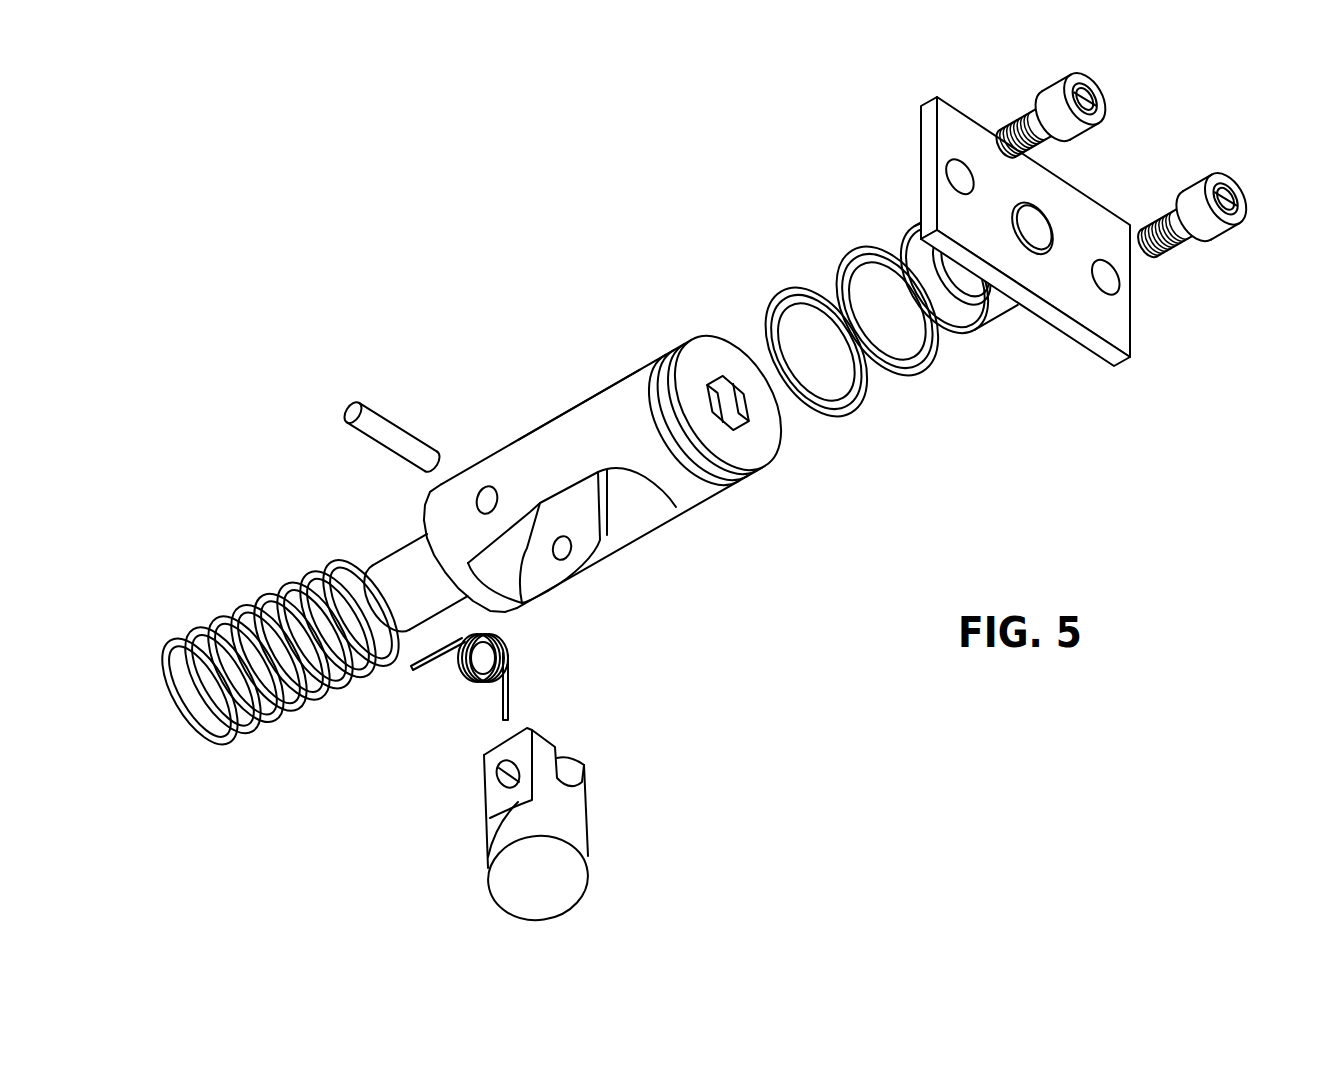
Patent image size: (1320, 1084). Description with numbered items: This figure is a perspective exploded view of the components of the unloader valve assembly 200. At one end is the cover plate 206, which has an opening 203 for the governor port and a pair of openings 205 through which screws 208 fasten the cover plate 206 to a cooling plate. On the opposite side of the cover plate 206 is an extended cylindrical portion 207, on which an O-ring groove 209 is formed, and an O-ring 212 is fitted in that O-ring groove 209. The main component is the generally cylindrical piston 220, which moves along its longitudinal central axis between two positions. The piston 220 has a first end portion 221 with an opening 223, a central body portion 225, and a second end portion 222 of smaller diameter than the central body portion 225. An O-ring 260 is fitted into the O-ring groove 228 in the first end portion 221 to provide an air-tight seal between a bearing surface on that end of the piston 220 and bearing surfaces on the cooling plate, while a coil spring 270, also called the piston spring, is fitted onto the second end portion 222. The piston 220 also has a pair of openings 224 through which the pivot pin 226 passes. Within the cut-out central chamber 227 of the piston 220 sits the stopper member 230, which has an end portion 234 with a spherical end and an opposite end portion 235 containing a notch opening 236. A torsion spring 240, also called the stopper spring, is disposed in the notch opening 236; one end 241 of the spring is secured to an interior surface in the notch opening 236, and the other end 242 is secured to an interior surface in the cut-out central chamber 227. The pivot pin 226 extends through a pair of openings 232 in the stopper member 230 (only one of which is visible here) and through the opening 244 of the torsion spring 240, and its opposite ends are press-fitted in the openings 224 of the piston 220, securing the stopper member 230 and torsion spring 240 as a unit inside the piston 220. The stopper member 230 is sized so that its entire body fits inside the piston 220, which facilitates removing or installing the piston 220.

The unloader valve assembly 200 is at (490, 224).
The opening 203 is at (1128, 348).
The openings 205 is at (957, 166).
The cover plate 206 is at (1088, 218).
The extended cylindrical portion 207 is at (957, 320).
The screws 208 is at (1057, 100).
The O-ring groove 209 is at (1011, 323).
The O-ring 212 is at (862, 250).
The piston 220 is at (598, 418).
The first end portion 221 is at (703, 347).
The second end portion 222 is at (393, 560).
The opening 223 is at (742, 418).
The openings 224 is at (480, 492).
The central body portion 225 is at (548, 443).
The pivot pin 226 is at (368, 431).
The cut-out central chamber 227 is at (642, 512).
The O-ring groove 228 is at (730, 468).
The stopper member 230 is at (557, 809).
The openings 232 is at (518, 803).
The end portion 234 is at (543, 890).
The end portion 235 is at (543, 737).
The notch opening 236 is at (570, 767).
The torsion spring 240 is at (463, 690).
The end 241 is at (500, 712).
The end 242 is at (425, 675).
The opening 244 is at (440, 693).
The O-ring 260 is at (858, 402).
The coil spring 270 is at (222, 637).